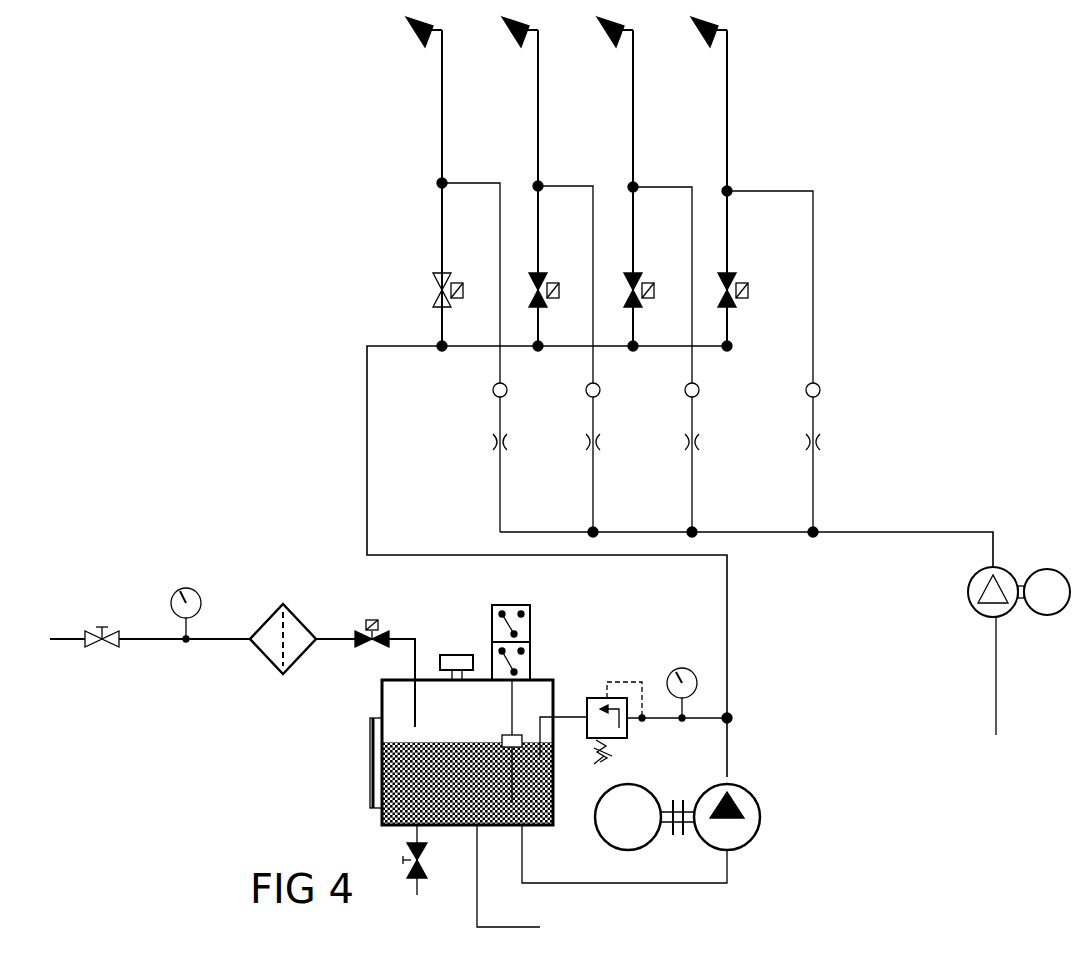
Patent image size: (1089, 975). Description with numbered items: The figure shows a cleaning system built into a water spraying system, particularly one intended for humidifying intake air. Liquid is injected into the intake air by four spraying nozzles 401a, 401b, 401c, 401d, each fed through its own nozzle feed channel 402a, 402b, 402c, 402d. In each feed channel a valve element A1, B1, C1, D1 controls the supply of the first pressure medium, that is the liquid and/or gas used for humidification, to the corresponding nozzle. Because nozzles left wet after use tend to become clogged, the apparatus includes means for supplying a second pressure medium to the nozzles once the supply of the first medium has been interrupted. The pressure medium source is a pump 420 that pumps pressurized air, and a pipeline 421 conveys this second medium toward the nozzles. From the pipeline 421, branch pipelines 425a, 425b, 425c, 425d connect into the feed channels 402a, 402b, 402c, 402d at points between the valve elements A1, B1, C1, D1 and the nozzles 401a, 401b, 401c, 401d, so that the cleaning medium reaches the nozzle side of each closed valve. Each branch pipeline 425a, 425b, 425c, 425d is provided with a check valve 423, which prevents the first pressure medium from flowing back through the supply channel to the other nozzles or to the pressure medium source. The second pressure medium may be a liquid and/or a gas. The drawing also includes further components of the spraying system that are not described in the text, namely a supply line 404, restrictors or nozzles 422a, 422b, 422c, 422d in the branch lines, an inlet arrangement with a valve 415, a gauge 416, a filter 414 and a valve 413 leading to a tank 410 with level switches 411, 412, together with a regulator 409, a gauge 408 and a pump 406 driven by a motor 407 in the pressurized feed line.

The spraying nozzle 401a is at (424, 42).
The spraying nozzle 401b is at (520, 40).
The spraying nozzle 401c is at (616, 40).
The spraying nozzle 401d is at (710, 42).
The nozzle feed channel 402a is at (440, 104).
The nozzle feed channel 402b is at (536, 106).
The nozzle feed channel 402c is at (631, 106).
The nozzle feed channel 402d is at (725, 110).
The pipeline 425a is at (480, 174).
The pipeline 425b is at (566, 186).
The pipeline 425c is at (667, 187).
The pipeline 425d is at (764, 191).
The valve element A1 is at (447, 279).
The valve element B1 is at (544, 279).
The valve element C1 is at (639, 279).
The valve element D1 is at (734, 279).
The supply line 404 is at (367, 522).
The check valve 423 is at (493, 390).
The restrictor 422a is at (494, 442).
The restrictor 422b is at (587, 443).
The restrictor 422c is at (686, 444).
The restrictor 422d is at (823, 446).
The pipeline 421 is at (747, 533).
The pump 420 is at (980, 622).
The shut-off valve 415 is at (107, 650).
The pressure gauge 416 is at (212, 642).
The filter 414 is at (270, 664).
The fill valve 413 is at (362, 650).
The tank 410 is at (380, 810).
The level switch 411 is at (540, 650).
The level switch 412 is at (492, 618).
The pressure regulator 409 is at (592, 695).
The pressure gauge 408 is at (655, 717).
The pump 406 is at (752, 800).
The motor 407 is at (606, 850).